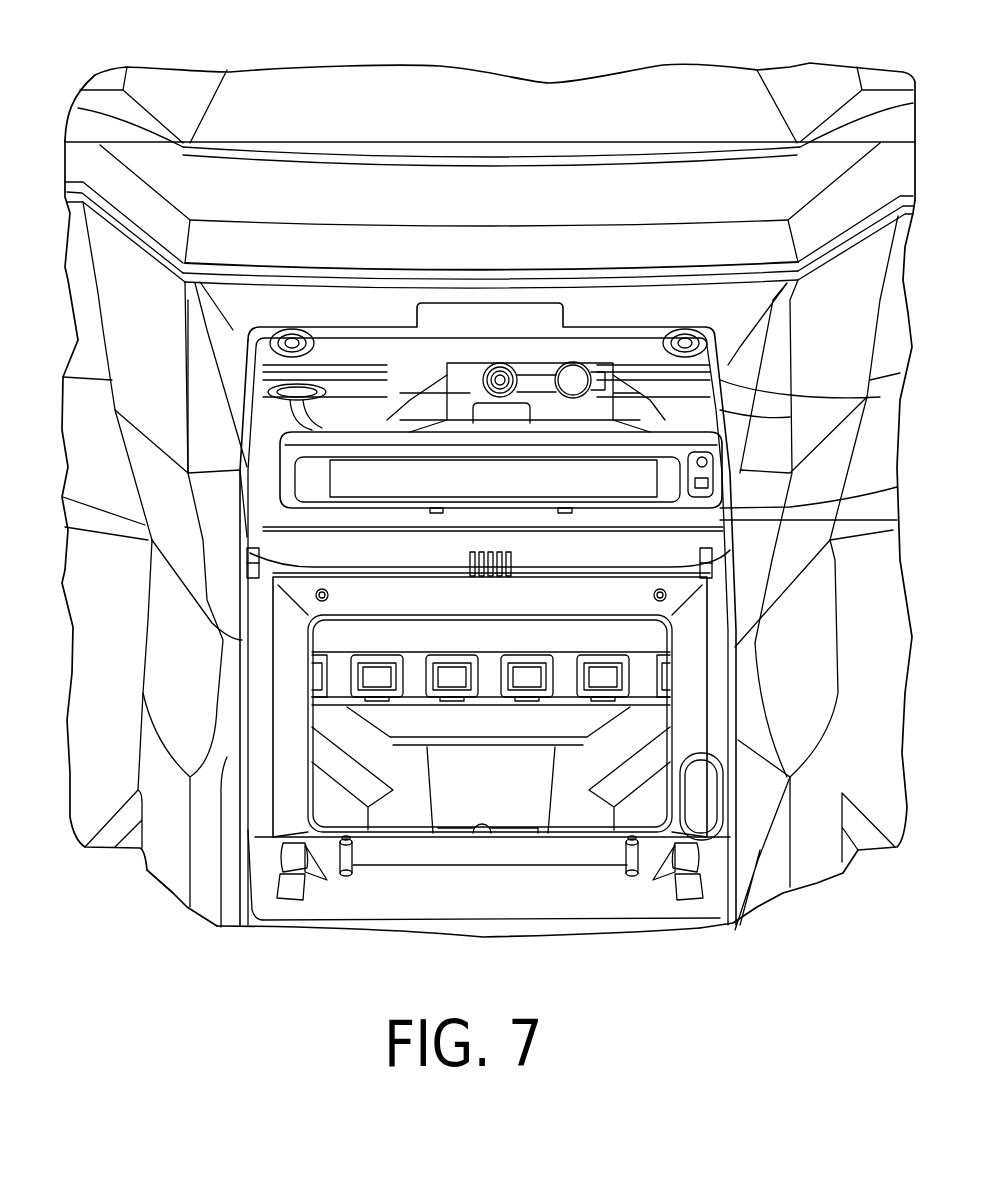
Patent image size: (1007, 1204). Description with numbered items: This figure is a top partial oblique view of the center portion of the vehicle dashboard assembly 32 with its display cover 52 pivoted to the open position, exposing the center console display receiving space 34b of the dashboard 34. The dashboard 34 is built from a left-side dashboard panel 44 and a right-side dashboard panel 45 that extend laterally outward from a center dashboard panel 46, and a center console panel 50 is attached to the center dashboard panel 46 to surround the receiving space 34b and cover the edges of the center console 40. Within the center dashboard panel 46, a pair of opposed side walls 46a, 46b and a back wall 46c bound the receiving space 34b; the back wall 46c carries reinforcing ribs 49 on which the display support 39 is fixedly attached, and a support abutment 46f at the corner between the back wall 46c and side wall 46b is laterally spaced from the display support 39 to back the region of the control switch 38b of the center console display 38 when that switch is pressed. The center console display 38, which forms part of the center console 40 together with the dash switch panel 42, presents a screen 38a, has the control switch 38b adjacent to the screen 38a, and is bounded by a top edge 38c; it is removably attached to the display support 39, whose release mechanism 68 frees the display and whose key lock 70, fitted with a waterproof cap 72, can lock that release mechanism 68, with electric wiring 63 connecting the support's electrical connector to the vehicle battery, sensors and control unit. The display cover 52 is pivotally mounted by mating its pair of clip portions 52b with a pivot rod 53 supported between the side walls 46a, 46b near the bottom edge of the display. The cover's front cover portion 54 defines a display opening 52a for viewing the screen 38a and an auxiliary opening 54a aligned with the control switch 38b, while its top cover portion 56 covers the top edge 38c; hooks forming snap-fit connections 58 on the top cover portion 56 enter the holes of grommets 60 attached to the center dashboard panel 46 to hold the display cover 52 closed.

The dashboard assembly 32 is at (543, 56).
The dashboard 34 is at (62, 158).
The center console display receiving space 34b is at (284, 418).
The center console display 38 is at (722, 410).
The screen 38a is at (588, 482).
The control switch 38b is at (370, 513).
The top edge 38c is at (365, 437).
The display support 39 is at (444, 403).
The center console 40 is at (623, 945).
The dash switch panel 42 is at (412, 683).
The left-side dashboard panel 44 is at (92, 340).
The right-side dashboard panel 45 is at (888, 340).
The center dashboard panel 46 is at (356, 345).
The side wall 46a is at (263, 516).
The side wall 46b is at (897, 520).
The back wall 46c is at (897, 487).
The support abutment 46f is at (880, 397).
The reinforcing ribs 49 is at (460, 350).
The center console panel 50 is at (860, 283).
The display cover 52 is at (380, 893).
The display opening 52a is at (490, 835).
The clip portions 52b is at (318, 572).
The pivot rod 53 is at (532, 580).
The front cover portion 54 is at (722, 688).
The auxiliary opening 54a is at (733, 787).
The top cover portion 56 is at (553, 907).
The snap-fit connections 58 is at (280, 860).
The grommets 60 is at (260, 323).
The electric wiring 63 is at (268, 433).
The release mechanism 68 is at (502, 413).
The key lock 70 is at (486, 356).
The cap 72 is at (548, 372).